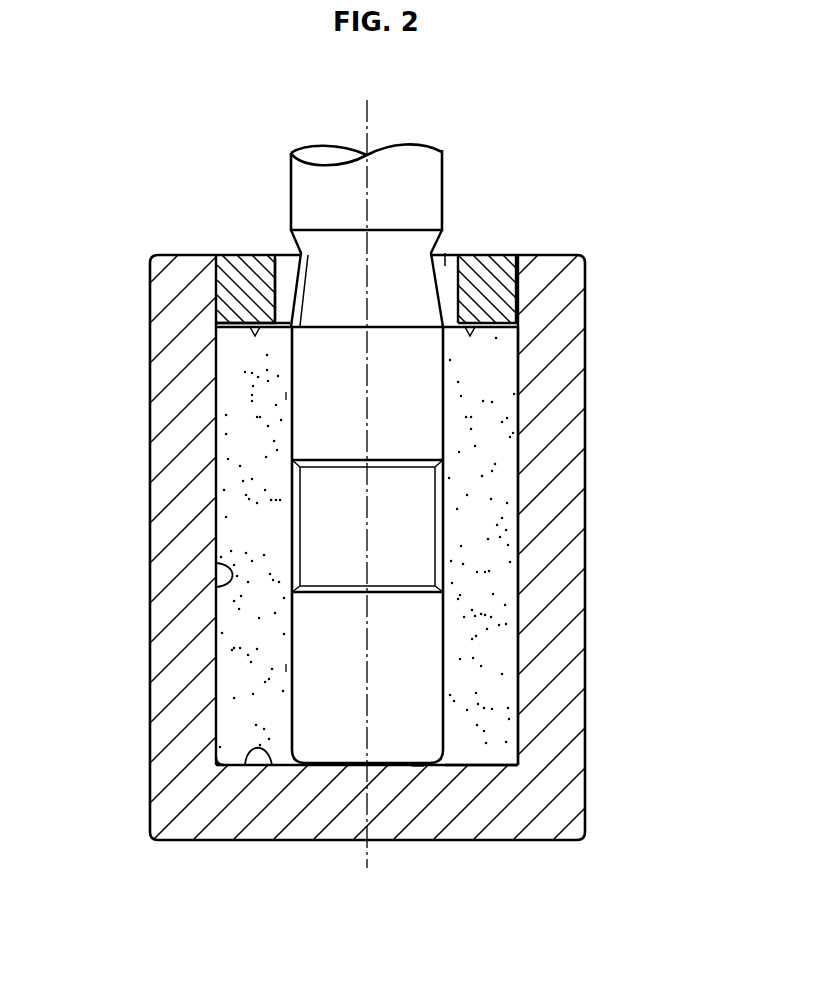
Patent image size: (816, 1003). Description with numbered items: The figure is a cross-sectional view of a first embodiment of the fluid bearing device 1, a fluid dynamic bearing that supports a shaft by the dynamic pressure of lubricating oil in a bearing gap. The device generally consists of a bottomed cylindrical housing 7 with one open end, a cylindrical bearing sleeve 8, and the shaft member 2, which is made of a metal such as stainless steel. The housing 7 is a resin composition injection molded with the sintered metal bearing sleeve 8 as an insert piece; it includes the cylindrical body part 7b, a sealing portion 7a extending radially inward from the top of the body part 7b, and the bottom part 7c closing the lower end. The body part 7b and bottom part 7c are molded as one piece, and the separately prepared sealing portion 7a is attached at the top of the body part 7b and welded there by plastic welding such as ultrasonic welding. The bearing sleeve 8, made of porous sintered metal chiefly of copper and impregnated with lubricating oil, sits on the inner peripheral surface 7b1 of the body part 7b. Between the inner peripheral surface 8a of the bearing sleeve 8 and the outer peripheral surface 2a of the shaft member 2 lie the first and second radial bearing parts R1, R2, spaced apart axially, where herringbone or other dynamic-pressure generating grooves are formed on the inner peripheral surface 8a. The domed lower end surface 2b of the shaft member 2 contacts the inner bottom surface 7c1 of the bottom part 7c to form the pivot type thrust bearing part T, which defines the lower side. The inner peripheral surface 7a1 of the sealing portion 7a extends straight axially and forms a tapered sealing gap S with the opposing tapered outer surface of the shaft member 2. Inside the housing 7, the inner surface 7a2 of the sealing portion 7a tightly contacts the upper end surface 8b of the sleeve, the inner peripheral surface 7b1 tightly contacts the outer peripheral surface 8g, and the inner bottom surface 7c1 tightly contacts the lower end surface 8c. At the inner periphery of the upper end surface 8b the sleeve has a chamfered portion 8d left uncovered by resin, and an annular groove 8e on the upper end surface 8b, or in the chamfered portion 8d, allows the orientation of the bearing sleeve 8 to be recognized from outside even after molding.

The fluid bearing device 1 is at (578, 178).
The shaft member 2 is at (430, 148).
The outer peripheral surface of the shaft member 2a is at (447, 365).
The lower end surface of the shaft member 2b is at (393, 768).
The housing 7 is at (585, 483).
The sealing portion 7a is at (240, 256).
The inner peripheral surface of the sealing portion 7a1 is at (283, 262).
The inner surface of the sealing portion 7a2 is at (222, 350).
The body part 7b is at (162, 498).
The inner peripheral surface of the body part 7b1 is at (222, 585).
The bottom part 7c is at (300, 828).
The inner bottom surface of the bottom part 7c1 is at (251, 752).
The bearing sleeve 8 is at (505, 568).
The inner peripheral surface of the bearing sleeve 8a is at (446, 436).
The upper end surface of the bearing sleeve 8b is at (523, 257).
The lower end surface of the bearing sleeve 8c is at (482, 768).
The chamfered portion 8d is at (308, 255).
The annular groove 8e is at (497, 256).
The outer peripheral surface of the bearing sleeve 8g is at (514, 644).
The sealing gap S is at (447, 263).
The first radial bearing part R1 is at (290, 396).
The second radial bearing part R2 is at (290, 668).
The thrust bearing part T is at (418, 768).